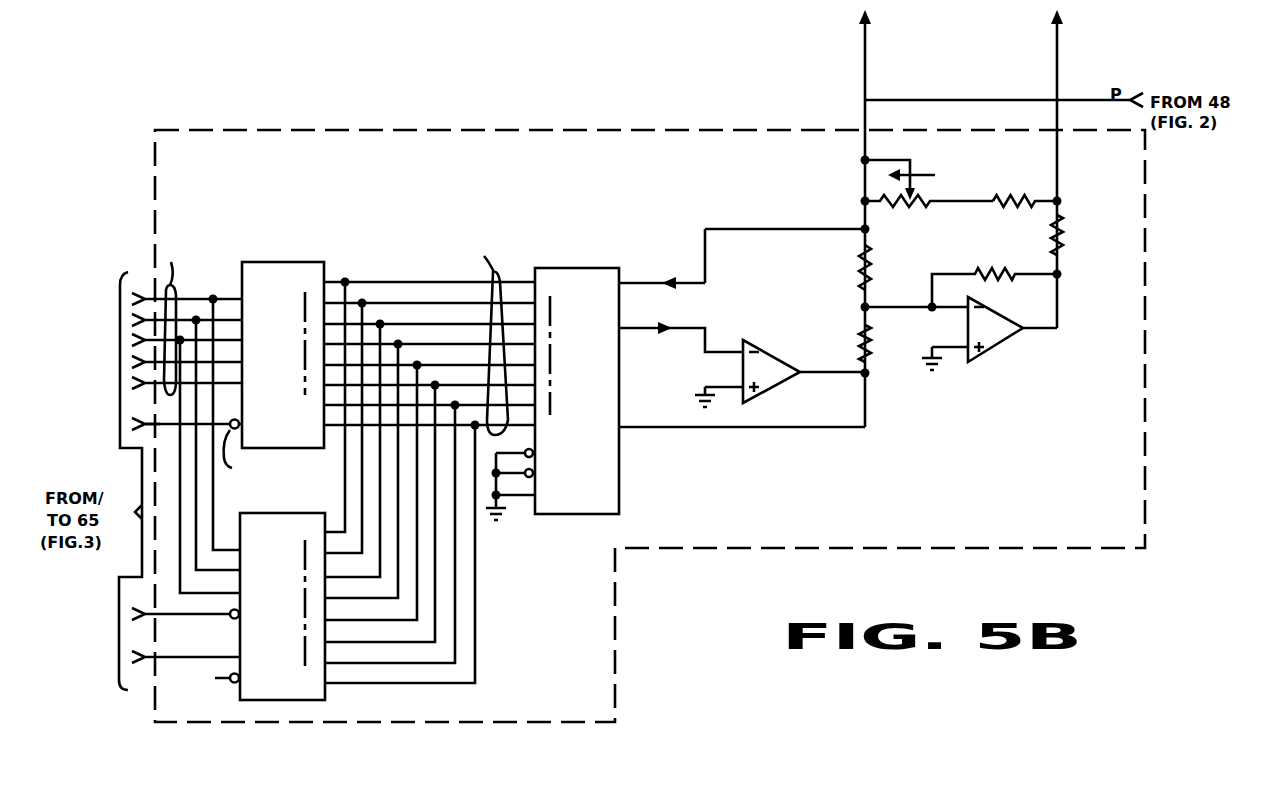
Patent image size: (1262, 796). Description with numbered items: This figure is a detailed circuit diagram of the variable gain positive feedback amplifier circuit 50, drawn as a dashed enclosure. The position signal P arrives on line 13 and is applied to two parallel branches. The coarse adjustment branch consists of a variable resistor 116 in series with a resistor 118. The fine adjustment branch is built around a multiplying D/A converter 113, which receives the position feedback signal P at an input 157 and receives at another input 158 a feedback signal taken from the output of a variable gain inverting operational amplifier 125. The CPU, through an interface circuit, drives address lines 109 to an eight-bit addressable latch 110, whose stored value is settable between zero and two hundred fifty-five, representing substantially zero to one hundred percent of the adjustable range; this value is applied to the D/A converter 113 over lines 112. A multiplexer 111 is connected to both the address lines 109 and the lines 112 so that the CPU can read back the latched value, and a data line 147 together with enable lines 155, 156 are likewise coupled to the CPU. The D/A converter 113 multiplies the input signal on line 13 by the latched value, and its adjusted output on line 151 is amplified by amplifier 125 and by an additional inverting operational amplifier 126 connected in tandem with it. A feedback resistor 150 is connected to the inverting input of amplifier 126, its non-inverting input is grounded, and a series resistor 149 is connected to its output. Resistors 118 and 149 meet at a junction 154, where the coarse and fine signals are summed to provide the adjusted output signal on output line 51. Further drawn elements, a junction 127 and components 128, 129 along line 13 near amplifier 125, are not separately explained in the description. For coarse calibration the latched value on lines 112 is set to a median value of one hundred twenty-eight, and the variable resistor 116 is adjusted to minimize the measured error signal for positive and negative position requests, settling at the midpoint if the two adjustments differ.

The line 13 is at (870, 30).
The variable gain positive feedback amplifier circuit 50 is at (1145, 492).
The output line 51 is at (1057, 58).
The address lines 109 is at (186, 315).
The addressable latch 110 is at (268, 262).
The multiplexer 111 is at (285, 492).
The lines 112 is at (487, 334).
The multiplying D/A converter 113 is at (572, 268).
The variable resistor 116 is at (912, 198).
The resistor 118 is at (1012, 196).
The variable gain inverting operational amplifier 125 is at (768, 357).
The inverting operational amplifier 126 is at (1022, 304).
The junction 127 is at (860, 226).
The resistor 128 is at (870, 333).
The resistor 129 is at (868, 305).
The data line 147 is at (148, 658).
The series resistor 149 is at (1062, 232).
The feedback resistor 150 is at (1000, 268).
The line 151 is at (706, 335).
The junction 154 is at (1062, 198).
The enable line 155 is at (165, 420).
The enable line 156 is at (148, 612).
The input 157 is at (624, 283).
The input 158 is at (624, 427).